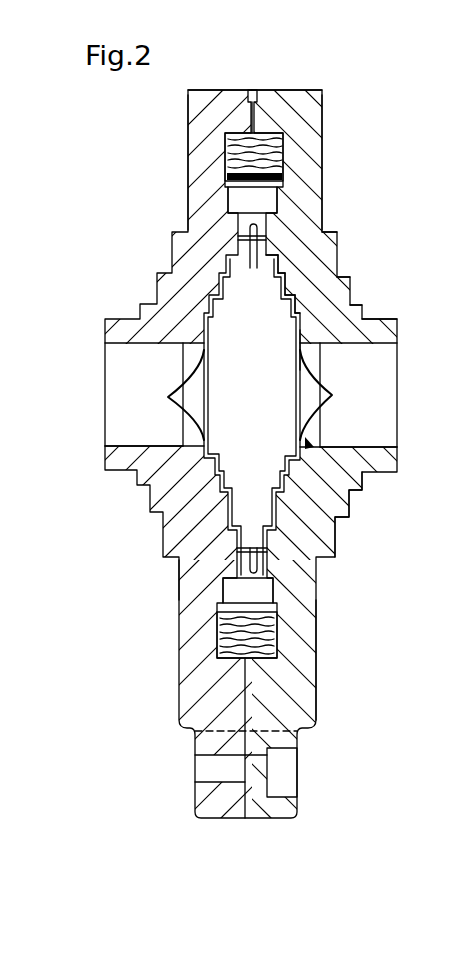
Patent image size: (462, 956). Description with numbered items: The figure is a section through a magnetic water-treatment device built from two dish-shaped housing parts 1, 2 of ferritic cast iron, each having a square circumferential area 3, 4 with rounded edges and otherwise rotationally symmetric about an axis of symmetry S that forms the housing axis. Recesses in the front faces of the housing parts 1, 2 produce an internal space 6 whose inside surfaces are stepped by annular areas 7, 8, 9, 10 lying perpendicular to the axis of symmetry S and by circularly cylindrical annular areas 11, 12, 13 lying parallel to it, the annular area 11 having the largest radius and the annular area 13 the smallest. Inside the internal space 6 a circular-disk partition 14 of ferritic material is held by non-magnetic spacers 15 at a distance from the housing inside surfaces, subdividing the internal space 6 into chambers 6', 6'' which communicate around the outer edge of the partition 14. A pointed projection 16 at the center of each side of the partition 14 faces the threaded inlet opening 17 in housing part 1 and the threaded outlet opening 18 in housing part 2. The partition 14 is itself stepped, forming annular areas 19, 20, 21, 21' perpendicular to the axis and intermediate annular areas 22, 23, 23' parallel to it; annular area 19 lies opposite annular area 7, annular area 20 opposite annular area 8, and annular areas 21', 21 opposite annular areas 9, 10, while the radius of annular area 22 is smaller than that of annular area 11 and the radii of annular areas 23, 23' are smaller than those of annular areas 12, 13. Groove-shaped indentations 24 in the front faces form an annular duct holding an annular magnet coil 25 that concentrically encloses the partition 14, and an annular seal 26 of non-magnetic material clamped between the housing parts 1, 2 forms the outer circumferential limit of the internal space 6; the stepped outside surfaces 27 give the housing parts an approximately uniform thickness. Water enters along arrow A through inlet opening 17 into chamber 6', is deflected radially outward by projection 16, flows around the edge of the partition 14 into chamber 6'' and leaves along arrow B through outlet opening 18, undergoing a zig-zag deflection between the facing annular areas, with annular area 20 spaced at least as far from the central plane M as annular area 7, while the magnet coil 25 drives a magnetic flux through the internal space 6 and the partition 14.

The housing part 1 is at (220, 664).
The housing part 2 is at (302, 683).
The square circumferential area 3 is at (207, 88).
The square circumferential area 4 is at (290, 88).
The internal space 6 is at (356, 514).
The chamber 6' is at (119, 448).
The chamber 6'' is at (378, 434).
The annular area 7 is at (263, 226).
The annular area 8 is at (303, 267).
The annular area 9 is at (338, 298).
The annular area 10 is at (378, 318).
The circularly cylindrical annular area 11 is at (283, 245).
The circularly cylindrical annular area 12 is at (308, 275).
The circularly cylindrical annular area 13 is at (360, 302).
The partition 14 is at (246, 497).
The spacers 15 is at (248, 240).
The projection 16 is at (202, 400).
The inlet opening 17 is at (125, 412).
The outlet opening 18 is at (370, 412).
The annular area 19 is at (270, 237).
The annular area 20 is at (262, 284).
The annular area 21 is at (274, 366).
The annular area 21' is at (269, 325).
The intermediate annular area 22 is at (297, 253).
The intermediate annular area 23 is at (258, 301).
The intermediate annular area 23' is at (273, 346).
The groove-shaped indentation 24 is at (280, 640).
The magnet coil 25 is at (283, 160).
The annular seal 26 is at (277, 200).
The outside surface 27 is at (323, 120).
The arrow A is at (106, 360).
The arrow B is at (378, 362).
The axis of symmetry S is at (79, 393).
The central plane M is at (255, 90).